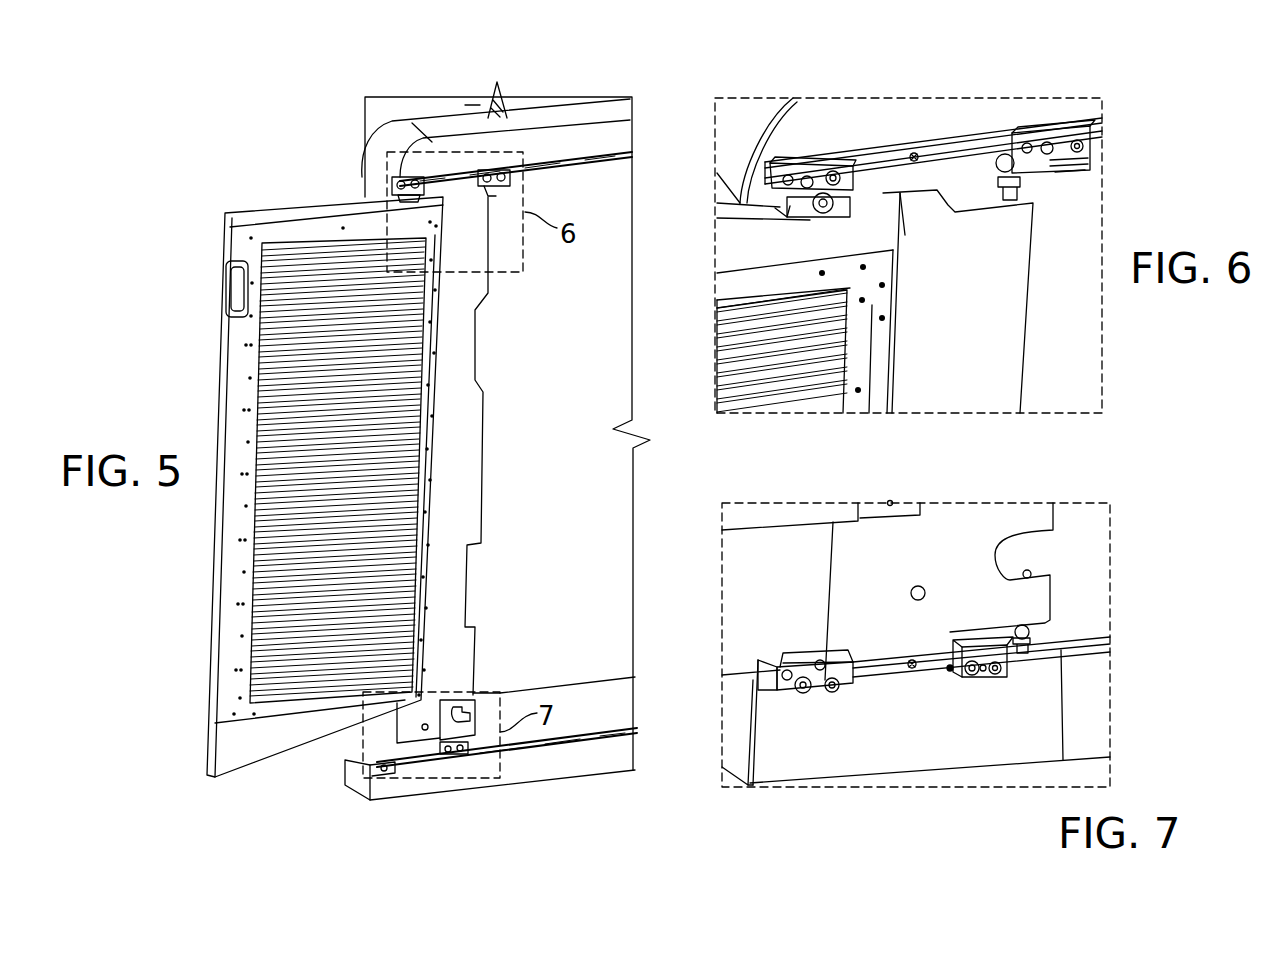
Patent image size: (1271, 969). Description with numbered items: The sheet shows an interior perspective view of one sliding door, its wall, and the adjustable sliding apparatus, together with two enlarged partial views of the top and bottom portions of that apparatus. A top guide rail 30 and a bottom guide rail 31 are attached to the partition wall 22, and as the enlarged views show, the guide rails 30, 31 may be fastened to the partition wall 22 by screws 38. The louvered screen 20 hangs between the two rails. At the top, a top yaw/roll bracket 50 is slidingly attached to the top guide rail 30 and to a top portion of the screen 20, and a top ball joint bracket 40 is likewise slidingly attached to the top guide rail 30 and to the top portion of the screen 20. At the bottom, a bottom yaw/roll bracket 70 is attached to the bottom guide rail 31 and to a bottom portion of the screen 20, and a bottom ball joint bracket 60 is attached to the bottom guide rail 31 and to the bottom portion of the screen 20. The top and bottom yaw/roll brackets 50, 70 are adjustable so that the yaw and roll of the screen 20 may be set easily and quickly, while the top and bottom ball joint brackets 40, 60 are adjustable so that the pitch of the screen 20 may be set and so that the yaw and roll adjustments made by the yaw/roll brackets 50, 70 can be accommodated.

In FIG. 5, the screen 20 is at (317, 247).
In FIG. 6, the screen 20 is at (985, 352).
In FIG. 7, the screen 20 is at (797, 573).
In FIG. 5, the partition wall 22 is at (560, 130).
In FIG. 6, the partition wall 22 is at (793, 122).
In FIG. 7, the partition wall 22 is at (847, 732).
In FIG. 5, the top guide rail 30 is at (412, 177).
In FIG. 6, the top guide rail 30 is at (960, 150).
In FIG. 5, the bottom guide rail 31 is at (583, 740).
In FIG. 7, the bottom guide rail 31 is at (1063, 660).
In FIG. 6, the screw 38 is at (917, 155).
In FIG. 7, the screw 38 is at (913, 680).
In FIG. 5, the top ball joint bracket 40 is at (497, 177).
In FIG. 6, the top ball joint bracket 40 is at (1047, 116).
In FIG. 5, the top yaw/roll bracket 50 is at (412, 177).
In FIG. 6, the top yaw/roll bracket 50 is at (815, 146).
In FIG. 5, the bottom ball joint bracket 60 is at (447, 760).
In FIG. 7, the bottom ball joint bracket 60 is at (980, 697).
In FIG. 5, the bottom yaw/roll bracket 70 is at (397, 770).
In FIG. 7, the bottom yaw/roll bracket 70 is at (815, 705).